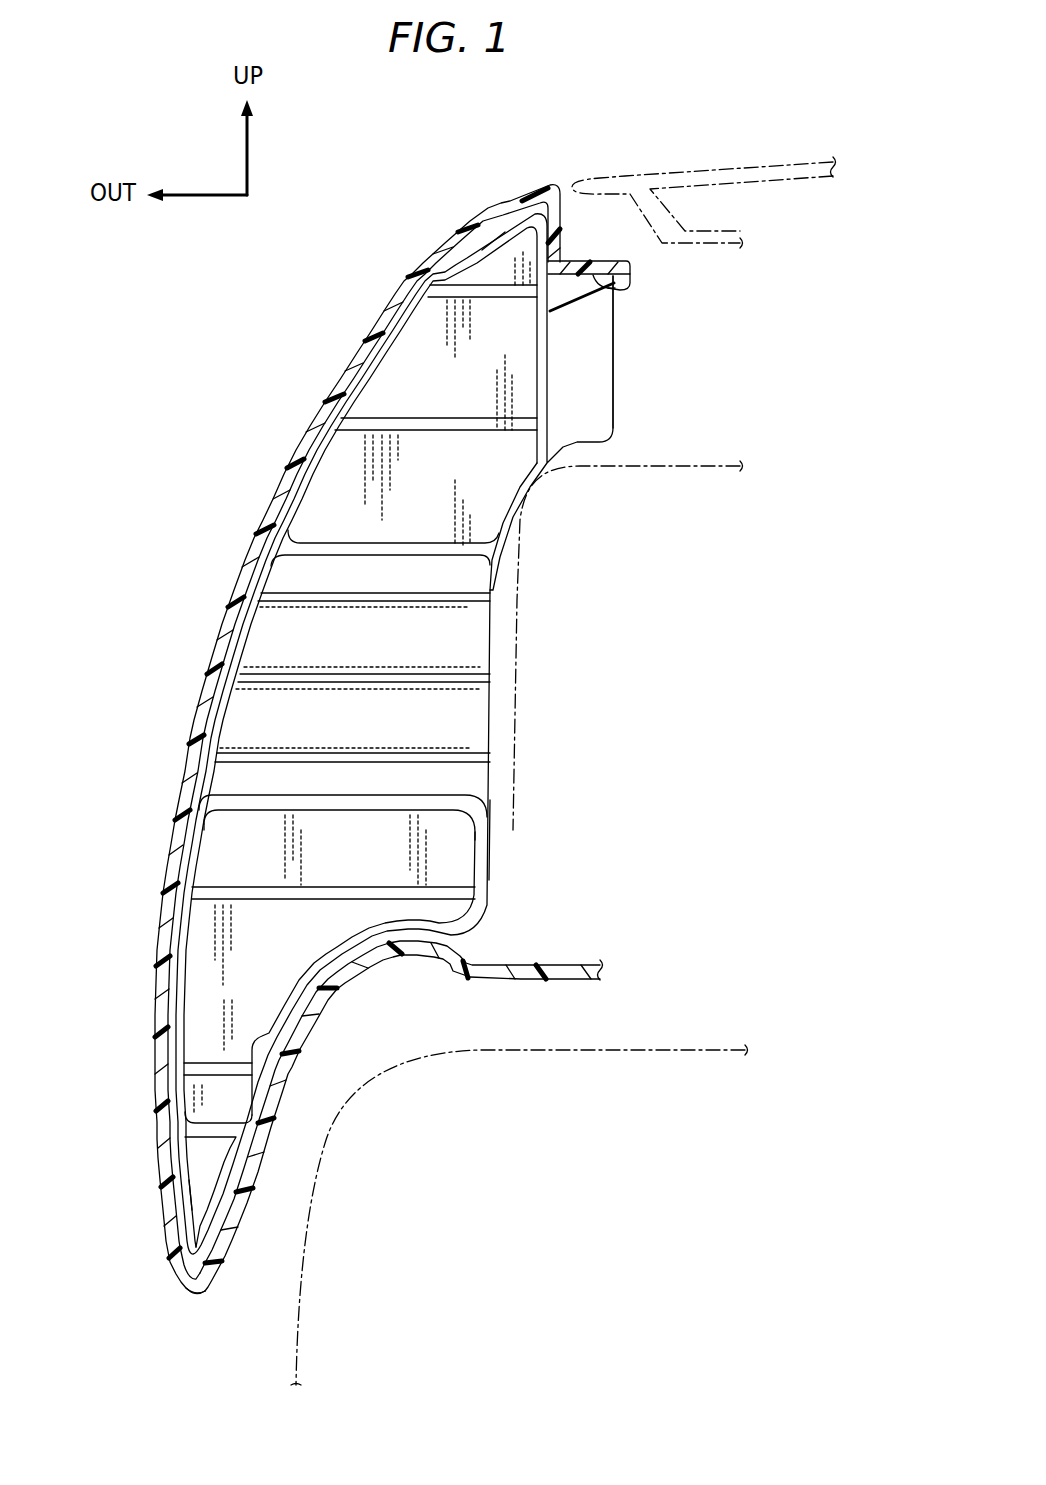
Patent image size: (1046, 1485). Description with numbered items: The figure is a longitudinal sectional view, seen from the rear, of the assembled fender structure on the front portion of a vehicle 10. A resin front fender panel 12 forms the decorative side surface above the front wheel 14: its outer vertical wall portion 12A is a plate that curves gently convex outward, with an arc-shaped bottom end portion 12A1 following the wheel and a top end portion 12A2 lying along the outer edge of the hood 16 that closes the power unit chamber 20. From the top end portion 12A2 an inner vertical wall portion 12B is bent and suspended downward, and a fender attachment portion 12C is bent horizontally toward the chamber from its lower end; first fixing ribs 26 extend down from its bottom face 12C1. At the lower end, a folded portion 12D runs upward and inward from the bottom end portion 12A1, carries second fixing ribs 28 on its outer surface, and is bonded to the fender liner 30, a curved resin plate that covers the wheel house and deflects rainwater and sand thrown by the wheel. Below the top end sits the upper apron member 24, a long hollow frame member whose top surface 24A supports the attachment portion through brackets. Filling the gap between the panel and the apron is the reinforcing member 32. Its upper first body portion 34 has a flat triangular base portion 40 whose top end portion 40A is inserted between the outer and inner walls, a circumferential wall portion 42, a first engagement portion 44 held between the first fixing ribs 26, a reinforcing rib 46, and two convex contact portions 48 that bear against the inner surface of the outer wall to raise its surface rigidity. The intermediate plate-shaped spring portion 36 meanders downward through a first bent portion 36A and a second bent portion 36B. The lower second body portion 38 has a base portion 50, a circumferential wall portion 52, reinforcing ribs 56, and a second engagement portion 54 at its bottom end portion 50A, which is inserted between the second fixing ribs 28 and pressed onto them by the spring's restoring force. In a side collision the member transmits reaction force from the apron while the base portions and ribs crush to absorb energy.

The vehicle 10 is at (107, 598).
The front fender panel 12 is at (395, 716).
The outer vertical wall portion 12A is at (245, 540).
The bottom end portion 12A1 is at (192, 1298).
The top end portion 12A2 is at (548, 178).
The inner vertical wall portion 12B is at (552, 228).
The fender attachment portion 12C is at (605, 256).
The bottom face 12C1 is at (622, 287).
The folded portion 12D is at (246, 1222).
The front wheel 14 is at (700, 1050).
The hood 16 is at (815, 150).
The power unit chamber 20 is at (866, 501).
The upper apron member 24 is at (646, 460).
The top surface 24A is at (706, 464).
The first fixing ribs 26 is at (578, 308).
The second fixing ribs 28 is at (222, 1160).
The fender liner 30 is at (523, 960).
The reinforcing member 32 is at (510, 677).
The first body portion 34 is at (568, 424).
The spring portion 36 is at (498, 645).
The first bent portion 36A is at (445, 637).
The second bent portion 36B is at (365, 722).
The second body portion 38 is at (499, 878).
The base portion 40 is at (438, 350).
The top end portion 40A is at (518, 240).
The circumferential wall portion 42 is at (385, 550).
The first engagement portion 44 is at (616, 363).
The reinforcing rib 46 is at (477, 423).
The contact portions 48 is at (450, 250).
The base portion 50 is at (238, 838).
The bottom end portion 50A is at (196, 1112).
The circumferential wall portion 52 is at (400, 808).
The second engagement portion 54 is at (183, 1183).
The reinforcing ribs 56 is at (240, 1048).